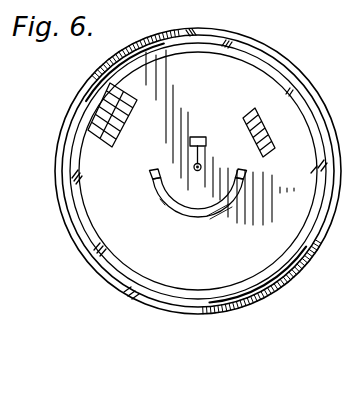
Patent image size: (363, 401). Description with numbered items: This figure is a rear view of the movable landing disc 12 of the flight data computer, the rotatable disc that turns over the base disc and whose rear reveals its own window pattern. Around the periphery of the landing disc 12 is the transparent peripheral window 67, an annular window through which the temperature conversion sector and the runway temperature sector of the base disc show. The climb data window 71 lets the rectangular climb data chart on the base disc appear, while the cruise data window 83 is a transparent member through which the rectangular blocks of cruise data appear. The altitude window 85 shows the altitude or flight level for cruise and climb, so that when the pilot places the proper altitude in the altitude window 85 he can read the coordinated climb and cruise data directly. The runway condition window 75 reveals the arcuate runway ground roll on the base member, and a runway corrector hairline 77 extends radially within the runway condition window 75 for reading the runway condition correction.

The landing disc 12 is at (317, 84).
The climb data window 71 is at (139, 42).
The transparent peripheral window 67 is at (247, 265).
The altitude window 85 is at (201, 136).
The cruise data window 83 is at (268, 148).
The runway corrector hairline 77 is at (150, 188).
The runway condition window 75 is at (247, 194).